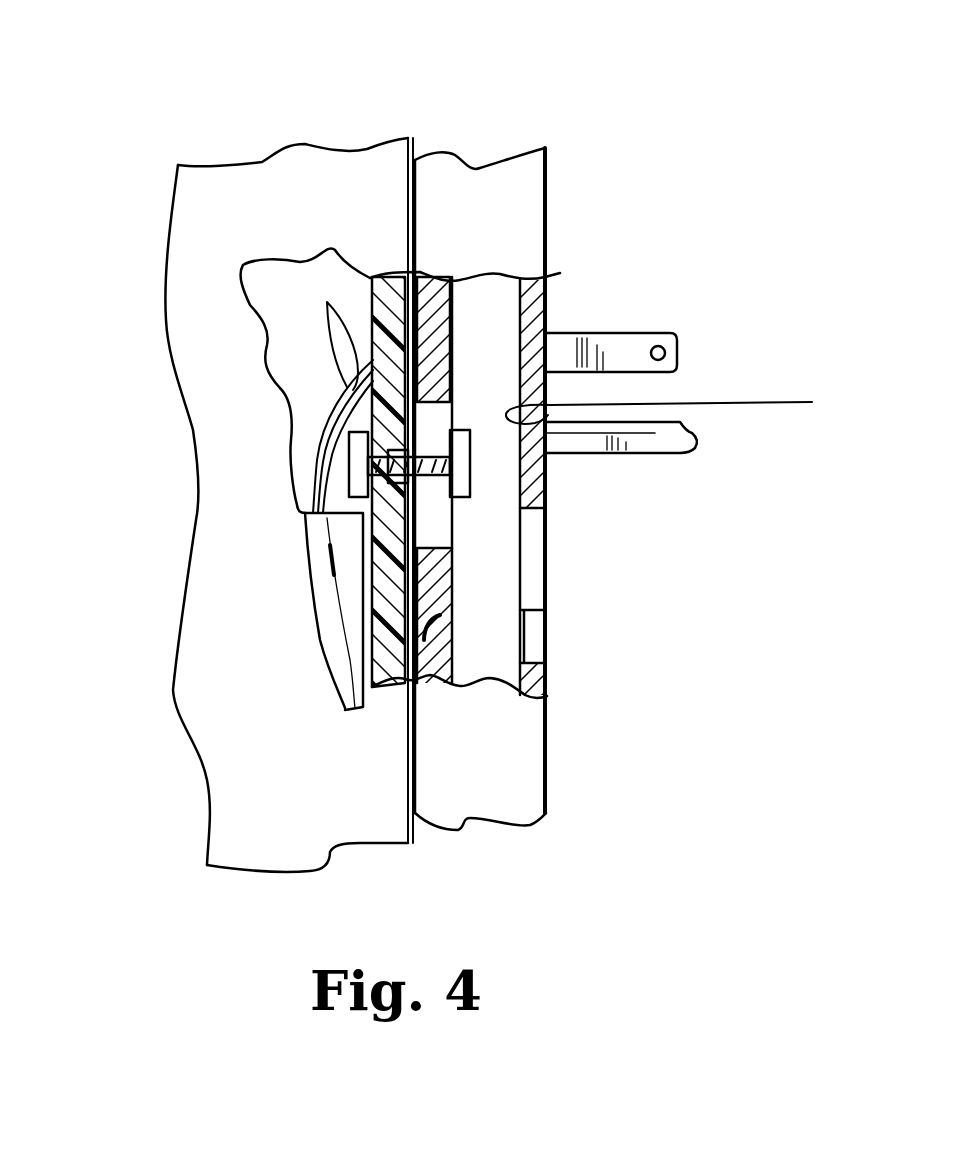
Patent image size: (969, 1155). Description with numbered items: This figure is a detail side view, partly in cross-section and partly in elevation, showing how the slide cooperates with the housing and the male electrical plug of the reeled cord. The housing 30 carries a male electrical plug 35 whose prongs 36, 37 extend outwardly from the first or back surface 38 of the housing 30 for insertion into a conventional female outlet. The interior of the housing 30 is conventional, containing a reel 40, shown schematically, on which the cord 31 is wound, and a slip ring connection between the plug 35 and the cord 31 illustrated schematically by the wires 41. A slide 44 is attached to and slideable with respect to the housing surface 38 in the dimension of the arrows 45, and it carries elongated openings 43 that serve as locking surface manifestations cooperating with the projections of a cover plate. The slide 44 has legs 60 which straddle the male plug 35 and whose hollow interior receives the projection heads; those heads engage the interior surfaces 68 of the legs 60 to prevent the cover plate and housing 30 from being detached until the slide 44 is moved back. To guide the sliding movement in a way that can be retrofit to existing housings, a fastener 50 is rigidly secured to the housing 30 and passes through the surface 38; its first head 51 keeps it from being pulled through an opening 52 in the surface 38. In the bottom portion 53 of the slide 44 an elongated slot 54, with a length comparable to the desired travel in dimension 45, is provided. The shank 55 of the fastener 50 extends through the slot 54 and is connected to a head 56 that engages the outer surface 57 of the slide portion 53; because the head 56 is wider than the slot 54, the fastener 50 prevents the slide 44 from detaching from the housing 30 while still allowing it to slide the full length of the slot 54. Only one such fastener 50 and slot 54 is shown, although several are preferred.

The housing 30 is at (210, 380).
The cord 31 is at (328, 563).
The male electrical plug 35 is at (688, 384).
The prong 36 is at (617, 345).
The prong 37 is at (646, 443).
The first surface 38 is at (390, 315).
The reel 40 is at (352, 542).
The wires 41 is at (327, 302).
The elongated openings 43 is at (541, 520).
The slide 44 is at (532, 128).
The dimension of sliding 45 is at (493, 447).
The fastener 50 is at (322, 458).
The first head 51 is at (362, 432).
The opening 52 is at (403, 483).
The bottom portion 53 is at (430, 630).
The elongated slot 54 is at (428, 547).
The shank 55 is at (412, 457).
The head 56 is at (545, 477).
The outer surface 57 is at (450, 588).
The legs 60 is at (565, 212).
The interior surfaces 68 is at (675, 406).